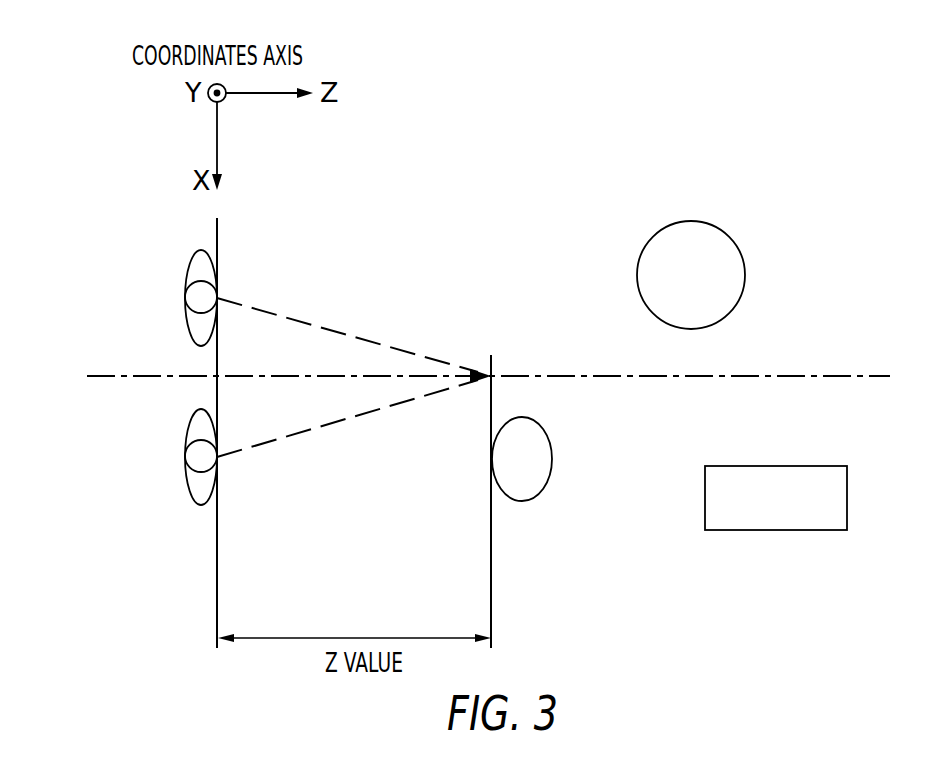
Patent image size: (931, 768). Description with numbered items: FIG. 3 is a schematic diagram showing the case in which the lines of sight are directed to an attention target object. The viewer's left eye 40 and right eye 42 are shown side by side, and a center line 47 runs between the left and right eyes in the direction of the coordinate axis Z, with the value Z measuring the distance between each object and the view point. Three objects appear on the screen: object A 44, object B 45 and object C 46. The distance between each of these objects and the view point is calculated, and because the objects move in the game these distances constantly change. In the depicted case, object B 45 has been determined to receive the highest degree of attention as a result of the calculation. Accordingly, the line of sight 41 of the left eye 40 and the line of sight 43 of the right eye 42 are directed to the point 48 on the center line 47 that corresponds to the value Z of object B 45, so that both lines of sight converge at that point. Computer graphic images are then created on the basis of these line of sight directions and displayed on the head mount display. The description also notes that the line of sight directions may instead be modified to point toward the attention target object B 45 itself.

The left eye 40 is at (190, 322).
The line of sight of the left eye 41 is at (298, 318).
The right eye 42 is at (190, 487).
The line of sight of the right eye 43 is at (298, 437).
The object A 44 is at (733, 240).
The object B 45 is at (541, 493).
The object C 46 is at (776, 466).
The center line 47 is at (583, 374).
The point corresponding to the value Z of object B 48 is at (496, 379).